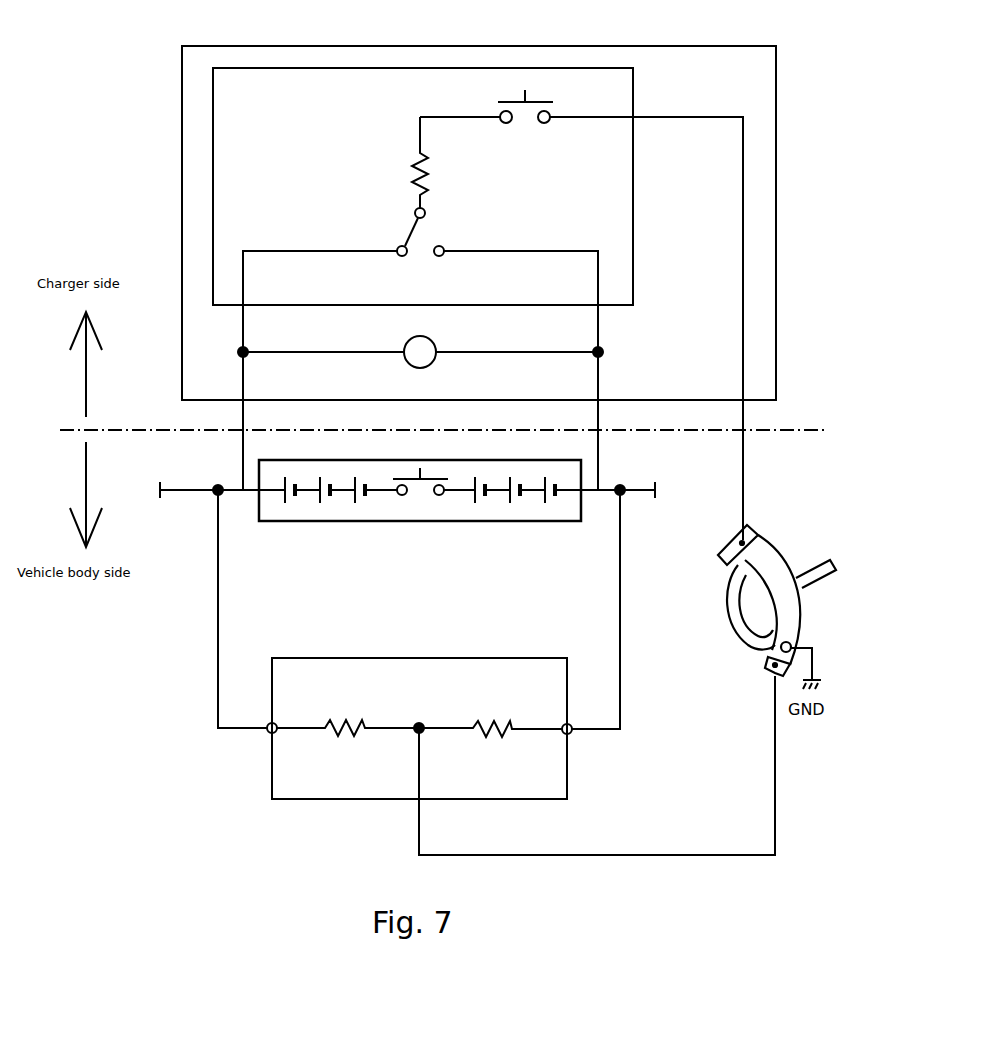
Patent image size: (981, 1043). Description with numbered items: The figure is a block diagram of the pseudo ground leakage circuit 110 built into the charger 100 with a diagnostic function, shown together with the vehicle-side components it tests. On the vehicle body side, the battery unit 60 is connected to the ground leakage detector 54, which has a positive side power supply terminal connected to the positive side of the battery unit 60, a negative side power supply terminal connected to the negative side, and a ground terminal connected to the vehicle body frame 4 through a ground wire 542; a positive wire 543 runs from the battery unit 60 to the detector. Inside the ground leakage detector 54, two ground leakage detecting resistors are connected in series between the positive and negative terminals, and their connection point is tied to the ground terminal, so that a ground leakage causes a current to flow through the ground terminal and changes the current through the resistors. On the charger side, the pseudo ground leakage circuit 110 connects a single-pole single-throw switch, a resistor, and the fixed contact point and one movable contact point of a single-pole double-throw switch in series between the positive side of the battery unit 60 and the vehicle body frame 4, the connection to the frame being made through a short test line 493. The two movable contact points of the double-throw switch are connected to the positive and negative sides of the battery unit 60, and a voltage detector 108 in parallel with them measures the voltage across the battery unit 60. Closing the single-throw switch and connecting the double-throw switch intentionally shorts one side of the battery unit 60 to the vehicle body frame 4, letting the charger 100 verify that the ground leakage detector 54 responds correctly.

The charger with a diagnostic function 100 is at (776, 236).
The pseudo ground leakage circuit 110 is at (633, 97).
The voltage detector 108 is at (437, 343).
The battery unit 60 is at (415, 521).
The short test line 493 is at (743, 474).
The vehicle body frame 4 is at (772, 548).
The positive wire 543 is at (218, 652).
The ground leakage detector 54 is at (567, 787).
The ground wire 542 is at (775, 810).